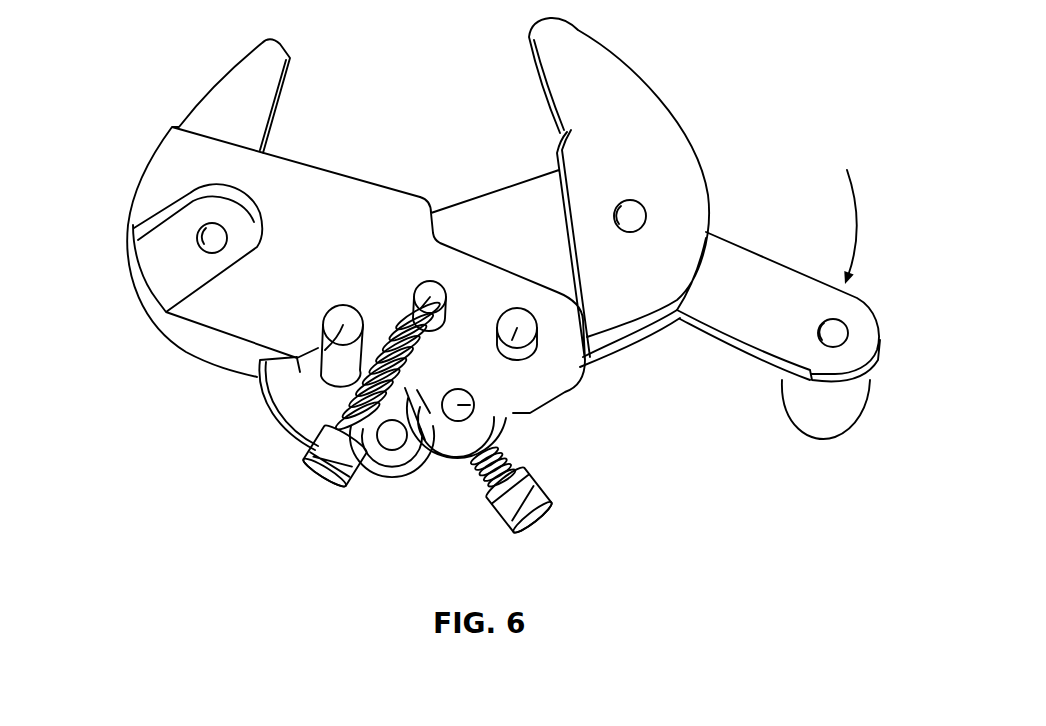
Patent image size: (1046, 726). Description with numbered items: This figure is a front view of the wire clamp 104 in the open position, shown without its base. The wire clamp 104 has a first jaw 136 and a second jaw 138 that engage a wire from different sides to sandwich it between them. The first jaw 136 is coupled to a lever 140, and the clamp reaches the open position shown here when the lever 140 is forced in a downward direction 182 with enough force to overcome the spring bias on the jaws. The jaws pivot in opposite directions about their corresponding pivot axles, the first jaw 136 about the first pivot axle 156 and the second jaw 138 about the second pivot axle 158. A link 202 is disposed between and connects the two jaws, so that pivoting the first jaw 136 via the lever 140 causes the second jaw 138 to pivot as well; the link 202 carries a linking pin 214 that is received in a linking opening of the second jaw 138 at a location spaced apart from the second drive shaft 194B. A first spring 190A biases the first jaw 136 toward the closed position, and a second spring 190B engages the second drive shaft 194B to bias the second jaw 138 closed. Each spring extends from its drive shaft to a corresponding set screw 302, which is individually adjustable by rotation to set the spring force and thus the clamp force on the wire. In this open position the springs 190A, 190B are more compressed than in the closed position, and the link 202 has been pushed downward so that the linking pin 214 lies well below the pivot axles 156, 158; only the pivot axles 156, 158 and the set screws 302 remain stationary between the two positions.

The wire clamp 104 is at (146, 36).
The second jaw 138 is at (170, 168).
The first jaw 136 is at (657, 157).
The lever 140 is at (750, 273).
The downward direction 182 is at (860, 222).
The second drive shaft 194B is at (430, 297).
The first pivot axle 156 is at (336, 342).
The second pivot axle 158 is at (520, 336).
The linking pin 214 is at (497, 413).
The link 202 is at (400, 437).
The second spring 190B is at (347, 393).
The first spring 190A is at (475, 480).
The set screw 302 is at (352, 462).